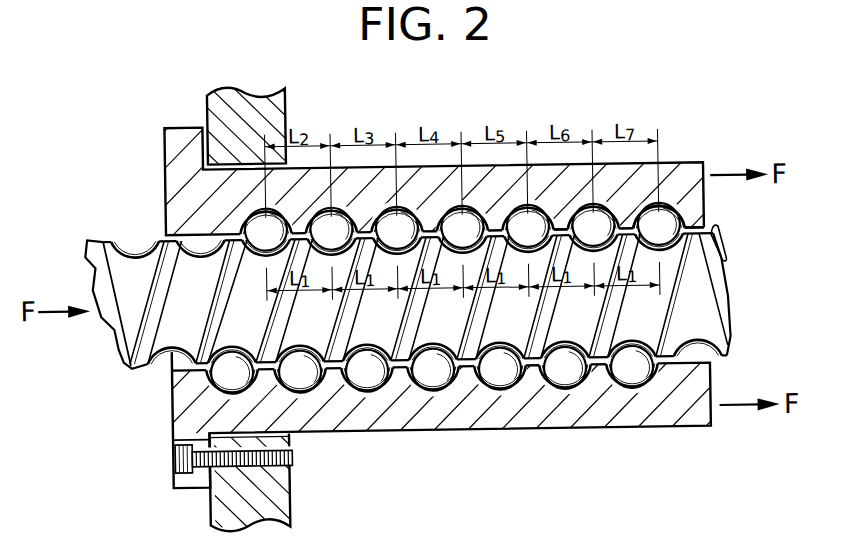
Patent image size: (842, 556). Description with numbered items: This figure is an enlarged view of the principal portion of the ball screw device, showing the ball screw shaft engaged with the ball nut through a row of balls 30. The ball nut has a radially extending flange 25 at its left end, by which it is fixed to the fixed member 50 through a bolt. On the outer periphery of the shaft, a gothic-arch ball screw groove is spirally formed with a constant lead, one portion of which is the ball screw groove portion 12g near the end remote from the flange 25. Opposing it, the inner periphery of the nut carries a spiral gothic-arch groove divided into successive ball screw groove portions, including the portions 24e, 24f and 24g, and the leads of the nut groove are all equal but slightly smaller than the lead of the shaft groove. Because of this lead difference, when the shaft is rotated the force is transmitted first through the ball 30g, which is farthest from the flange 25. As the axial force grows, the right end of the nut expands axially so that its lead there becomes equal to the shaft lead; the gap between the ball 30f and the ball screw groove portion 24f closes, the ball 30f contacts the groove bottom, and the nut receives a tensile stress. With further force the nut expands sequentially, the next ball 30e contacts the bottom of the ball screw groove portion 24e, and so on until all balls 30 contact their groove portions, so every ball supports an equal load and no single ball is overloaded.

The flange 25 is at (180, 138).
The balls 30 is at (242, 221).
The ball 30e is at (523, 222).
The ball 30f is at (632, 202).
The ball 30g is at (706, 226).
The ball screw groove portion 24e is at (566, 214).
The ball screw groove portion 24f is at (664, 196).
The ball screw groove portion 24g is at (680, 201).
The ball screw groove portion 12g is at (718, 246).
The fixed member 50 is at (228, 498).